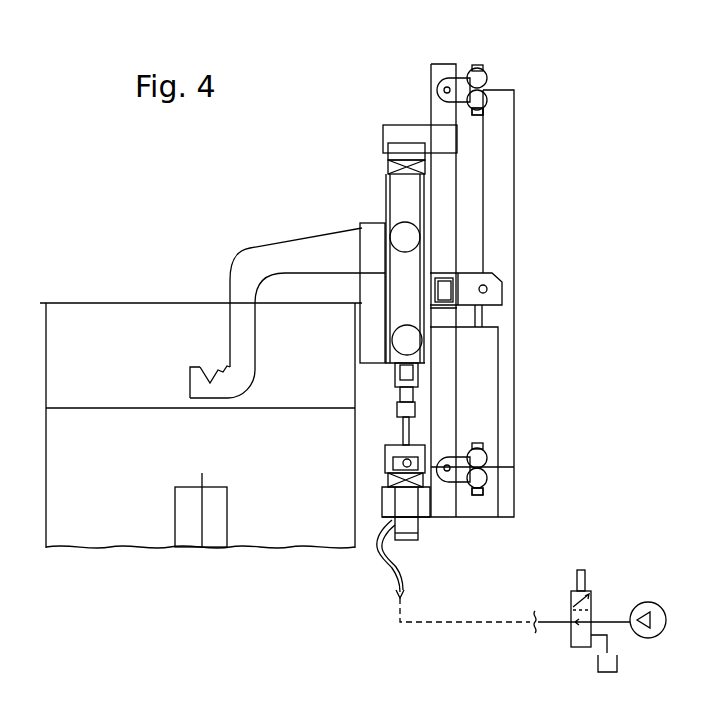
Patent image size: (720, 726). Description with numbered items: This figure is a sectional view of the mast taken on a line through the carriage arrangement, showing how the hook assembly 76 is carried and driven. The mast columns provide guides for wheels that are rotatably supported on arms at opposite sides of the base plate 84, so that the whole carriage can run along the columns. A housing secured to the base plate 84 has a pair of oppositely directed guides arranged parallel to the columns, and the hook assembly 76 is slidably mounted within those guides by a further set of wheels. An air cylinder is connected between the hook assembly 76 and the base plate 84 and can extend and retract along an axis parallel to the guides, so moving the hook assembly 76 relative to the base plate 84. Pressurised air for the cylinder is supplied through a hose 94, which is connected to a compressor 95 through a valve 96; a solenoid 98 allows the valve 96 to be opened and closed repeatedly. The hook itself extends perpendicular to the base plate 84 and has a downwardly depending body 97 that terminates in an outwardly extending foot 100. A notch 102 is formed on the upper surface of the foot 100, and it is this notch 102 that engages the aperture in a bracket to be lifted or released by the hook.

The hook assembly 76 is at (313, 247).
The base plate 84 is at (448, 206).
The hose 94 is at (392, 572).
The compressor 95 is at (648, 602).
The valve 96 is at (580, 647).
The body 97 is at (247, 325).
The solenoid 98 is at (587, 570).
The foot 100 is at (190, 380).
The notch 102 is at (210, 373).